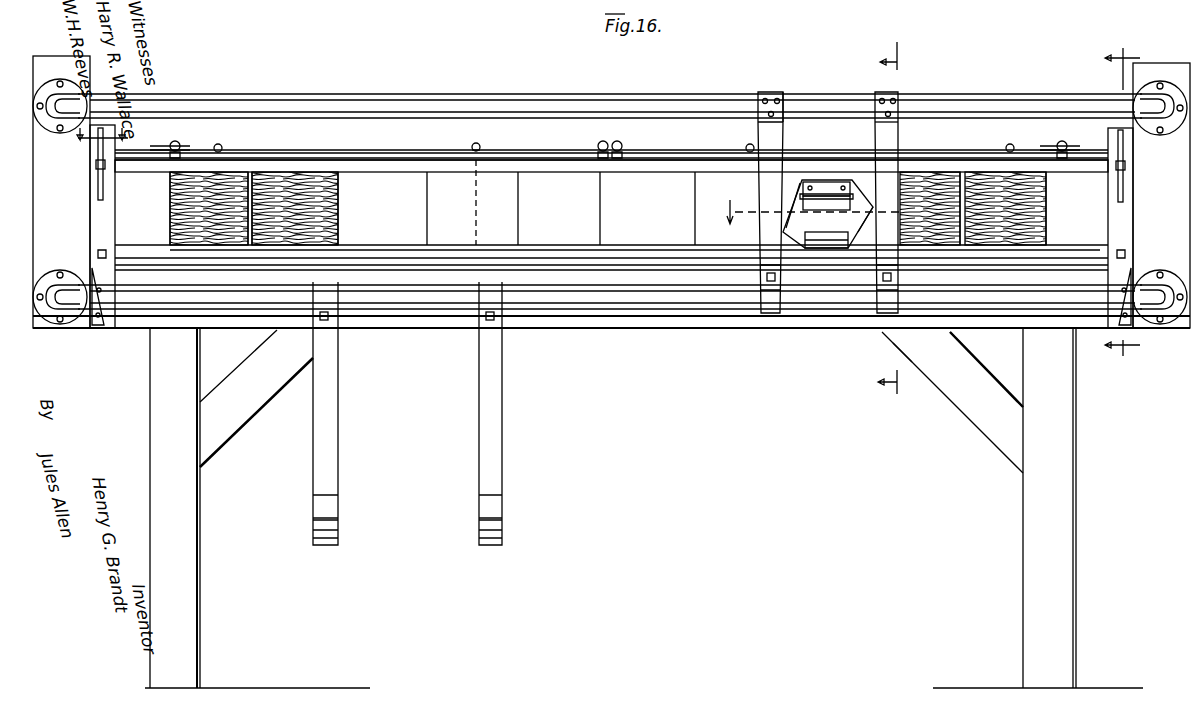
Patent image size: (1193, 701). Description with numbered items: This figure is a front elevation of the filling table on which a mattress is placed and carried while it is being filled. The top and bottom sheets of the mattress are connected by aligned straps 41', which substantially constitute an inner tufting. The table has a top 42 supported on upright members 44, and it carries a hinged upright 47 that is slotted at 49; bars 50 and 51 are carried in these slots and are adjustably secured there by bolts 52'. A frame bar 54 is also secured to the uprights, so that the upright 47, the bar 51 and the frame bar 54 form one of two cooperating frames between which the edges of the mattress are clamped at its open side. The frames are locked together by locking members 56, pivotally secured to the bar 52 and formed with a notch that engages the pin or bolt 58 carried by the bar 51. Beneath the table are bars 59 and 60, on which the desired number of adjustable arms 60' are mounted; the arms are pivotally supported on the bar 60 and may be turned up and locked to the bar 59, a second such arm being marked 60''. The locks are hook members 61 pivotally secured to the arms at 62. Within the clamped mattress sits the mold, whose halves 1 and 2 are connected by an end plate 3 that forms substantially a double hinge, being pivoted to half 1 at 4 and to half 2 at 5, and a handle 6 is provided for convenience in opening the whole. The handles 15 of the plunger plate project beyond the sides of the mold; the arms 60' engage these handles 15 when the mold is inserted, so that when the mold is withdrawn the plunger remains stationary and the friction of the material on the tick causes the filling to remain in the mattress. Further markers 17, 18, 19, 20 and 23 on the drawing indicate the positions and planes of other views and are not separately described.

The mold half 1 is at (858, 240).
The mold half 2 is at (793, 185).
The end plate 3 is at (875, 195).
The pivot 4 is at (825, 248).
The pivot 5 is at (836, 182).
The handle 6 is at (818, 196).
The handle 15 is at (755, 212).
The section line 17- 17 is at (895, 215).
The section line 18- 18 is at (95, 141).
The section line 19- 19 is at (1122, 200).
The bolt 20 is at (473, 237).
The axis 23 is at (715, 212).
The strap 41' is at (611, 167).
The table top 42 is at (422, 300).
The upright member 44 is at (1160, 155).
The upright 47 is at (90, 207).
The slot 49 is at (104, 193).
The bar 50 is at (352, 150).
The bar 51 is at (386, 158).
The bar 52 is at (1144, 172).
The bolt 52' is at (75, 174).
The frame bar 54 is at (570, 249).
The locking member 56 is at (160, 148).
The pin 58 is at (182, 148).
The bar 59 is at (658, 104).
The bar 60 is at (610, 315).
The adjustable arm 60' is at (344, 413).
The hanger 60'' is at (511, 413).
The hook member 61 is at (338, 533).
The pivot 62 is at (770, 92).